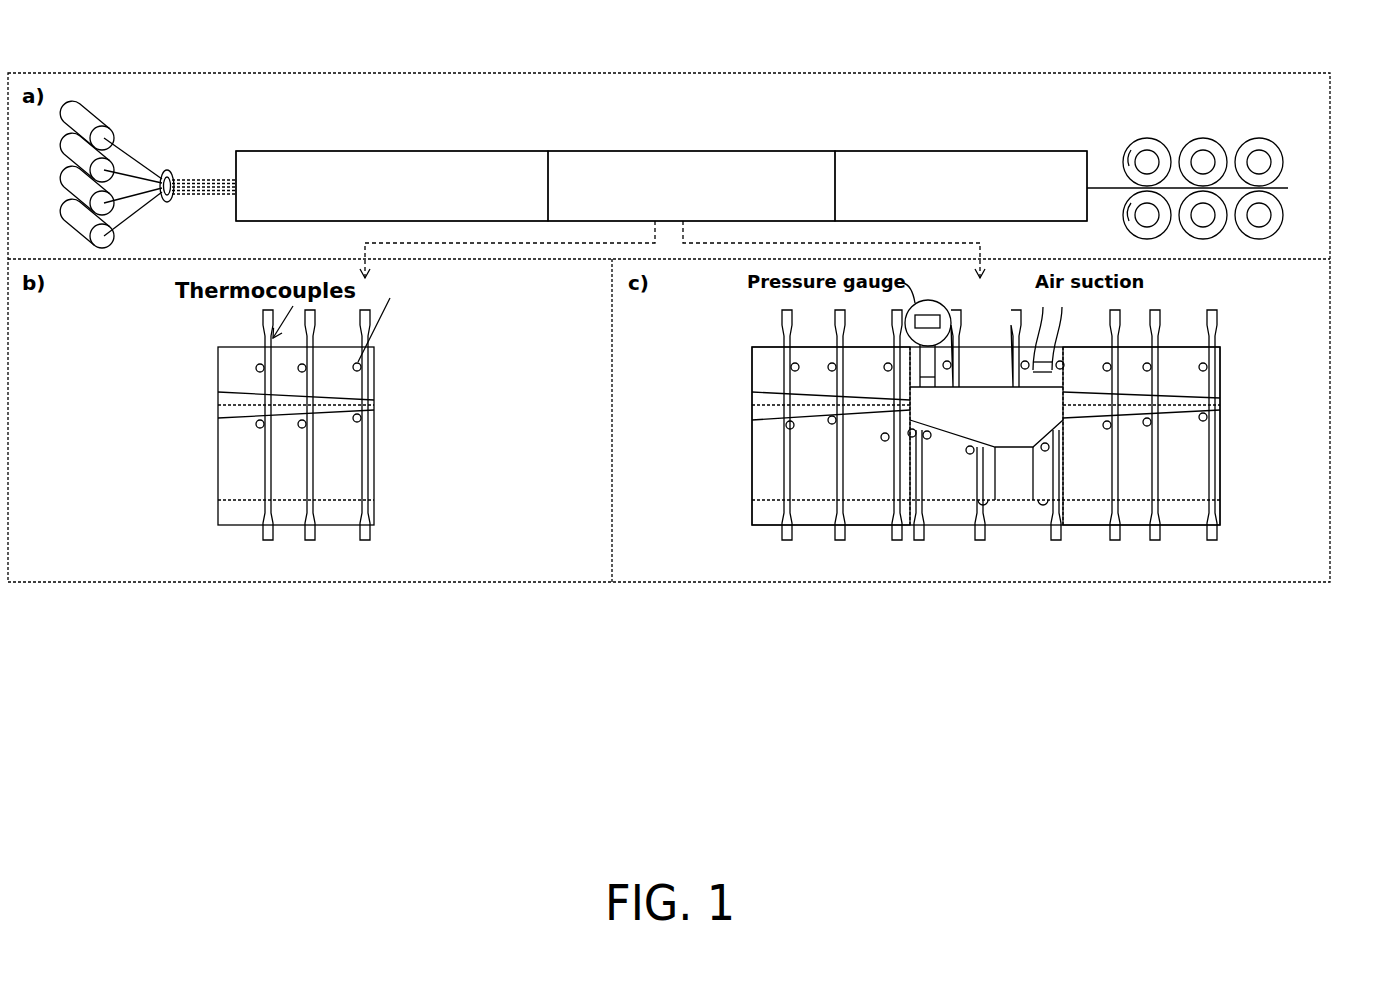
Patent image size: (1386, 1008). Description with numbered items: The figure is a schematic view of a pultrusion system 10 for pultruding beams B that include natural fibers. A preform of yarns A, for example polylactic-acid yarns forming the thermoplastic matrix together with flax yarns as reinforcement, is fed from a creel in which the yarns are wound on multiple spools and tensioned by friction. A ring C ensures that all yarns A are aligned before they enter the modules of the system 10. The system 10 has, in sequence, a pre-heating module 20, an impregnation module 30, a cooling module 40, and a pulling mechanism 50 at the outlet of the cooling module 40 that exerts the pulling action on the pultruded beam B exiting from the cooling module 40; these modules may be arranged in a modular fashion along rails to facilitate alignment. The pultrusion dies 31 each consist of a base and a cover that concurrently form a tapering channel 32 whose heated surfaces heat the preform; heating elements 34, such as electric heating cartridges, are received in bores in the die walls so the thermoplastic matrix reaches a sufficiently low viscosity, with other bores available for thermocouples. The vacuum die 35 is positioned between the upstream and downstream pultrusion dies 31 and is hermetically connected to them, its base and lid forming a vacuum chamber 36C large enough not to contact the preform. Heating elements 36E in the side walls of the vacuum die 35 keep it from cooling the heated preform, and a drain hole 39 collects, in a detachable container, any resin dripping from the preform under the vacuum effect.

The pultrusion system 10 is at (766, 106).
The pre-heating module 20 is at (535, 136).
The impregnation module 30 is at (678, 134).
The pultrusion die 31 is at (203, 441).
The tapering channel 32 is at (787, 419).
The heating elements 34 is at (832, 360).
The vacuum die 35 is at (1062, 562).
The vacuum chamber 36C is at (1033, 429).
The heating elements 36E is at (970, 454).
The drain hole 39 is at (1027, 489).
The cooling module 40 is at (992, 134).
The pulling mechanism 50 is at (1245, 124).
The yarns A is at (56, 107).
The beam B is at (1288, 188).
The ring C is at (175, 160).